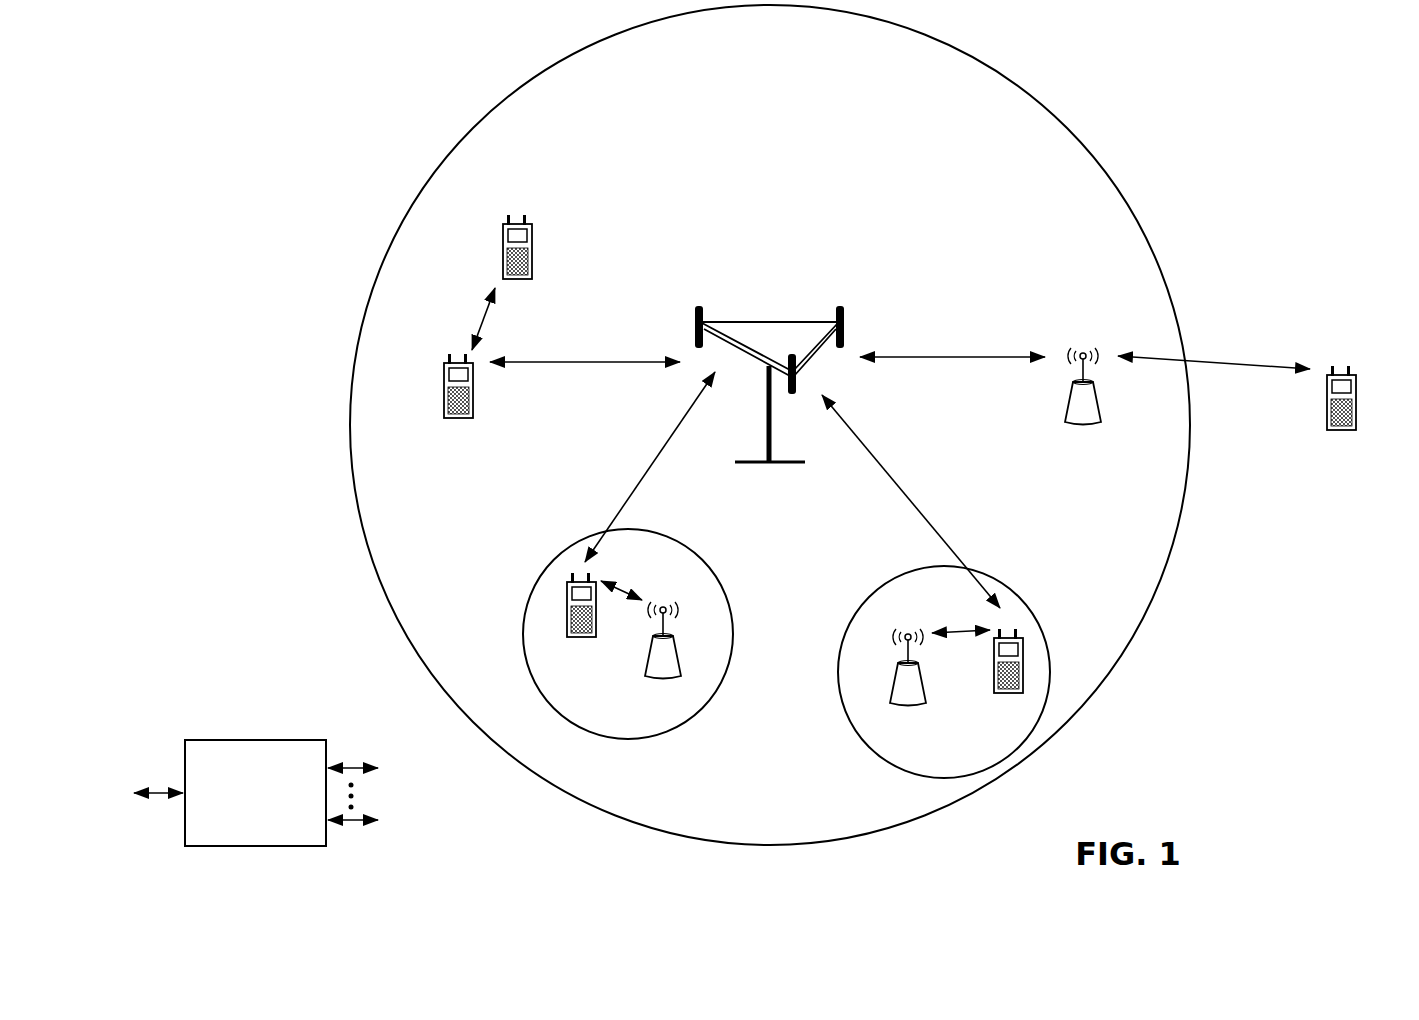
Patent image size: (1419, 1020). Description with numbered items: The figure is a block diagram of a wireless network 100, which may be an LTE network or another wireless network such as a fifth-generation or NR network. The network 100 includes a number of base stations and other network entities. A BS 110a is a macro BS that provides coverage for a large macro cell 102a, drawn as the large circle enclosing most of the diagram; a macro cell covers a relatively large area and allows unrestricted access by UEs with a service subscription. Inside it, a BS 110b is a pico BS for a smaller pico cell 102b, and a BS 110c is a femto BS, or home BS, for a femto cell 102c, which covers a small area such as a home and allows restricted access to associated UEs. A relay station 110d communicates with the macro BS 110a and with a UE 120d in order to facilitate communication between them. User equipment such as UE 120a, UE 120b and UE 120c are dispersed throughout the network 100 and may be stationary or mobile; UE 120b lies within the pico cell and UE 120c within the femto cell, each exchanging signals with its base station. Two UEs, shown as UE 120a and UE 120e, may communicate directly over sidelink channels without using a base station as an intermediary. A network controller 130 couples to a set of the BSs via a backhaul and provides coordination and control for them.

The wireless network 100 is at (1278, 63).
The macro cell 102a is at (1046, 110).
The pico cell 102b is at (706, 564).
The femto cell 102c is at (866, 600).
The macro BS 110a is at (763, 322).
The pico BS 110b is at (681, 660).
The femto BS 110c is at (893, 690).
The relay station 110d is at (1084, 352).
The UE 120a is at (444, 376).
The UE 120b is at (567, 628).
The UE 120c is at (994, 684).
The UE 120d is at (1356, 386).
The UE 120e is at (503, 237).
The network controller 130 is at (250, 740).